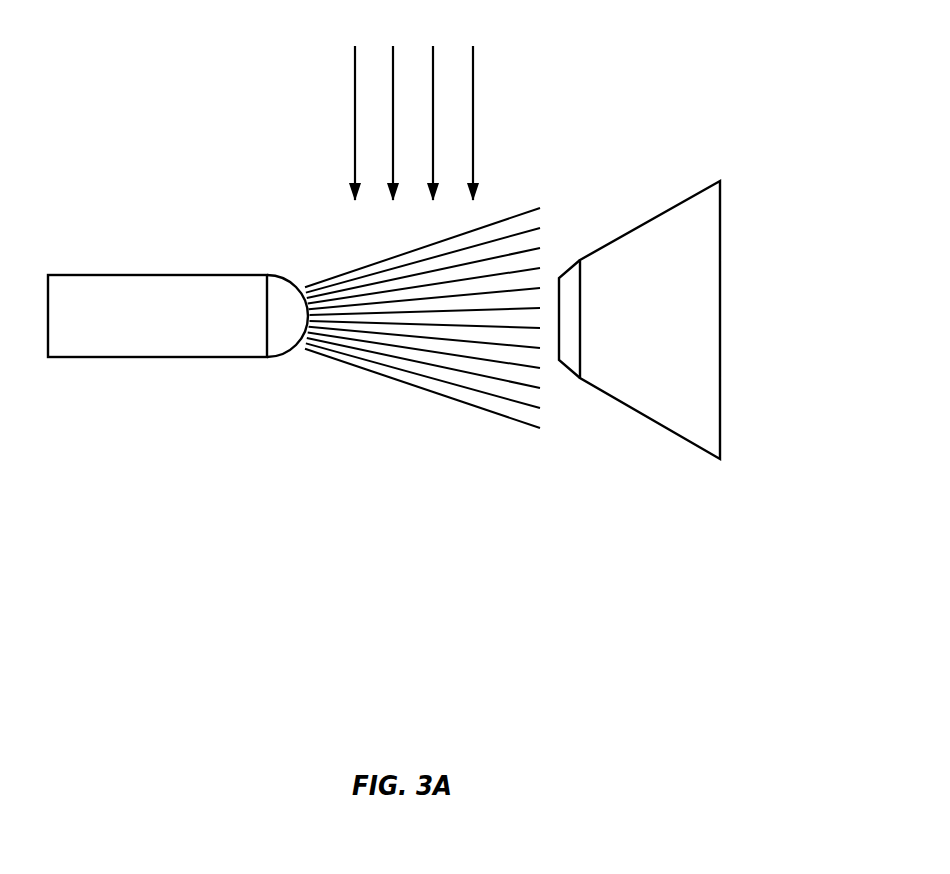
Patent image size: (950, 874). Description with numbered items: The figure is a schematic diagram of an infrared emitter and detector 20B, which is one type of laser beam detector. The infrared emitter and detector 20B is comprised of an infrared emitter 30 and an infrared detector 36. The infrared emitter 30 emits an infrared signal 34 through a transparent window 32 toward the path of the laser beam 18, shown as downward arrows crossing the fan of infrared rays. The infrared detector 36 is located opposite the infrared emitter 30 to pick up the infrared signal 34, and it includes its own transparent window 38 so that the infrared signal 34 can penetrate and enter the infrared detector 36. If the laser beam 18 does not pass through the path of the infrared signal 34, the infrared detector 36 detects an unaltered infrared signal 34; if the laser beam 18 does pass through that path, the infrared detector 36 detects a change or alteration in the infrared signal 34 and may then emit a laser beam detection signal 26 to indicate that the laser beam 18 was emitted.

The infrared emitter and detector 20B is at (202, 128).
The laser beam 18 is at (402, 26).
The infrared emitter 30 is at (137, 328).
The transparent window 32 is at (278, 342).
The infrared signal 34 is at (442, 375).
The transparent window 38 is at (572, 355).
The infrared detector 36 is at (672, 435).
The laser beam detection signal 26 is at (738, 322).